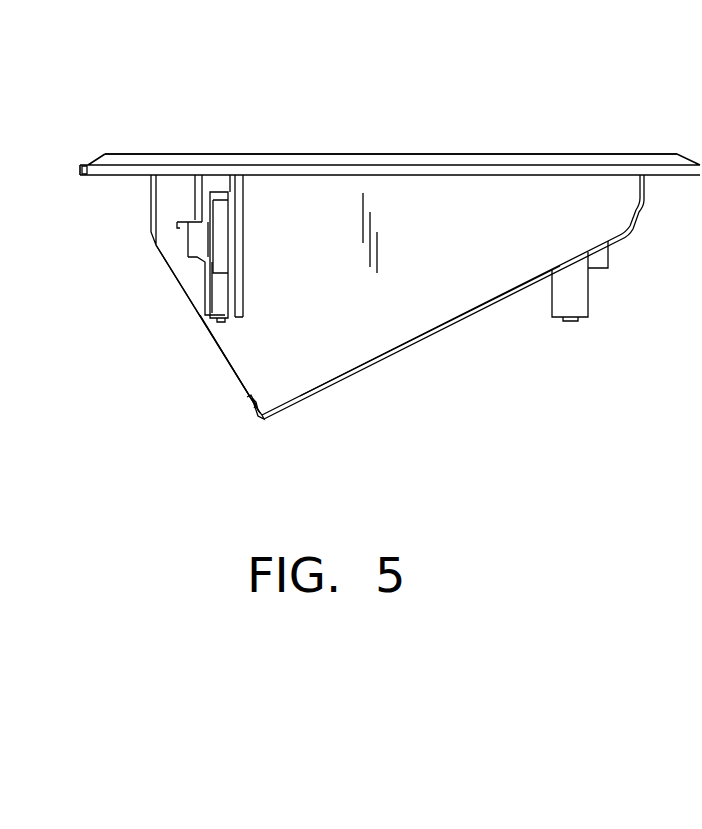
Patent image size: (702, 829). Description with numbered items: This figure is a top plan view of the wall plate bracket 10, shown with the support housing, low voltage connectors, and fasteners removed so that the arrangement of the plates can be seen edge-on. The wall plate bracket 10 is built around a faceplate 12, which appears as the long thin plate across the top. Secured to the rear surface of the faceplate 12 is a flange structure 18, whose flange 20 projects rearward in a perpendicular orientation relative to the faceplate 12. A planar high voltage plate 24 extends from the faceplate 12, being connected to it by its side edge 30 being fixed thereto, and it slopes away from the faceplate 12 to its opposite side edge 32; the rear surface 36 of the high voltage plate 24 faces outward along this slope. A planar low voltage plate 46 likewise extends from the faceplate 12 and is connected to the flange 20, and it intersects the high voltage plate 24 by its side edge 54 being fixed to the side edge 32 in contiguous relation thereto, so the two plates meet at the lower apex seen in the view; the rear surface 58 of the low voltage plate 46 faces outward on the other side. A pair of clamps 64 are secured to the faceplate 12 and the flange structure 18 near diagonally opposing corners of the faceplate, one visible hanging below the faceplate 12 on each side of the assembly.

The wall plate bracket 10 is at (298, 138).
The faceplate 12 is at (467, 140).
The flange structure 18 is at (309, 293).
The flange 20 is at (447, 273).
The high voltage plate 24 is at (199, 346).
The side edge 30 is at (147, 243).
The side edge 32 is at (260, 418).
The rear surface 36 is at (227, 350).
The low voltage plate 46 is at (358, 387).
The side edge 54 is at (257, 422).
The rear surface 58 is at (417, 342).
The clamp 64 is at (181, 256).